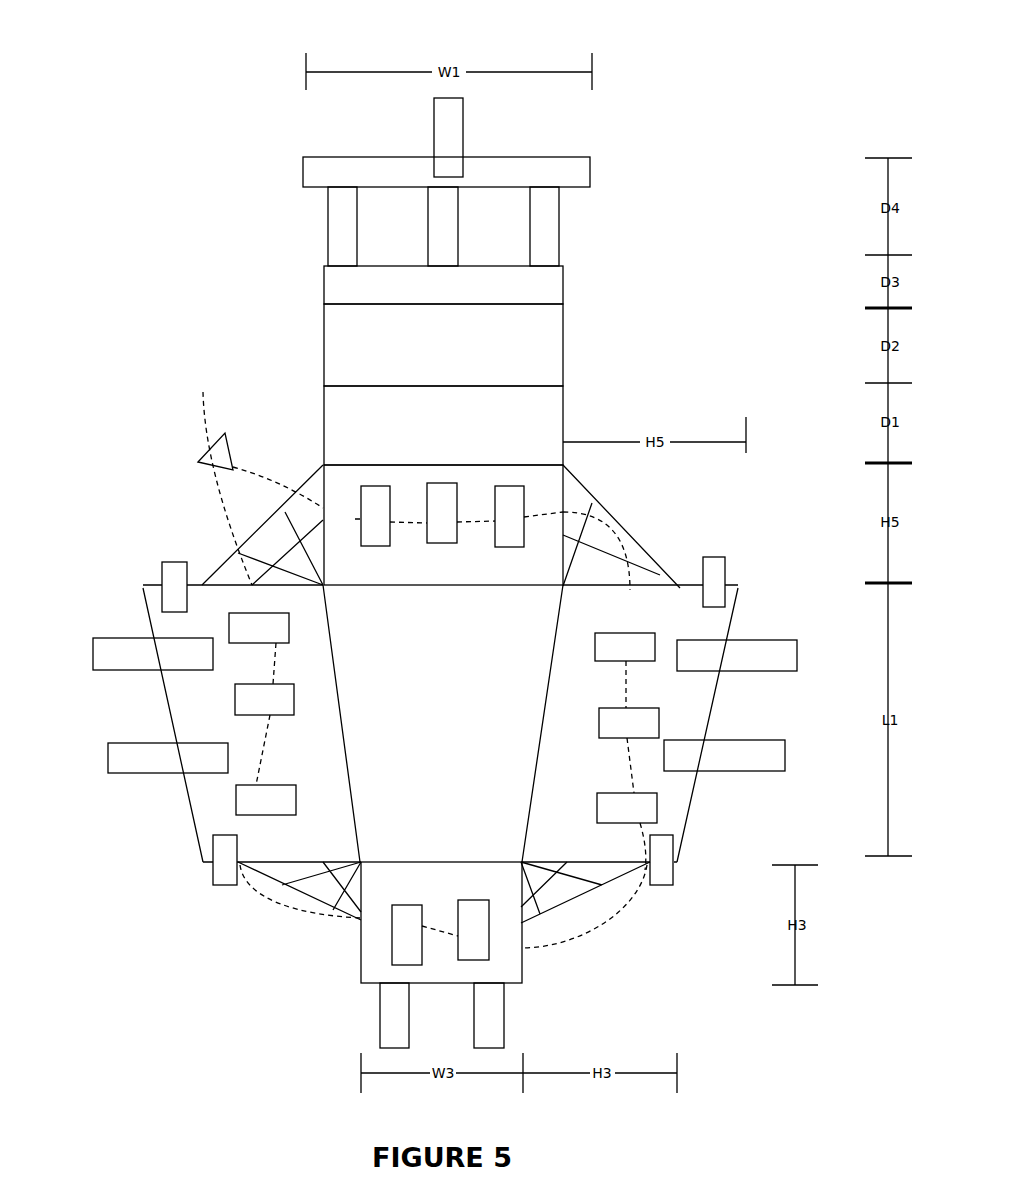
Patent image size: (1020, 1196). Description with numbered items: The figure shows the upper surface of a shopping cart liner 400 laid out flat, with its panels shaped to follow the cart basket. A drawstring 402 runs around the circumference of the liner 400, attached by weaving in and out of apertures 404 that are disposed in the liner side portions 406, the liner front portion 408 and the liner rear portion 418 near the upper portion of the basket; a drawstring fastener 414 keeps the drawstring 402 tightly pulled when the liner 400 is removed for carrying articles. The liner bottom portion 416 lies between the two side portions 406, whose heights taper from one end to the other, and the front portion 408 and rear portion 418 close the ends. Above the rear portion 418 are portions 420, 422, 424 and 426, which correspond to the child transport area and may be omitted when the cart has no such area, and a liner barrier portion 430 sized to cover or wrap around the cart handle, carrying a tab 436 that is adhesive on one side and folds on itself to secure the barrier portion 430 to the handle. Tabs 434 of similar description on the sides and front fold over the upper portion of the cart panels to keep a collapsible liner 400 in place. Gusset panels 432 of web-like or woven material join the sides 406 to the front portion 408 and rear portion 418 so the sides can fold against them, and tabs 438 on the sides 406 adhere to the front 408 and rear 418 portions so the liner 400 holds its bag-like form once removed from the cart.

The cart liner 400 is at (287, 157).
The drawstring 402 is at (223, 508).
The apertures 404 is at (372, 487).
The liner side portions 406 is at (200, 813).
The liner front portion 408 is at (361, 960).
The drawstring fastener 414 is at (203, 440).
The liner bottom portion 416 is at (435, 700).
The liner rear portion 418 is at (347, 487).
The liner portion 420 is at (567, 420).
The liner portion 422 is at (567, 342).
The liner portion 424 is at (567, 277).
The liner portion 426 is at (567, 228).
The liner barrier portion 430 is at (598, 160).
The gusset panels 432 is at (222, 553).
The tabs 434 is at (467, 133).
The tab 436 is at (137, 630).
The tabs 438 is at (168, 580).